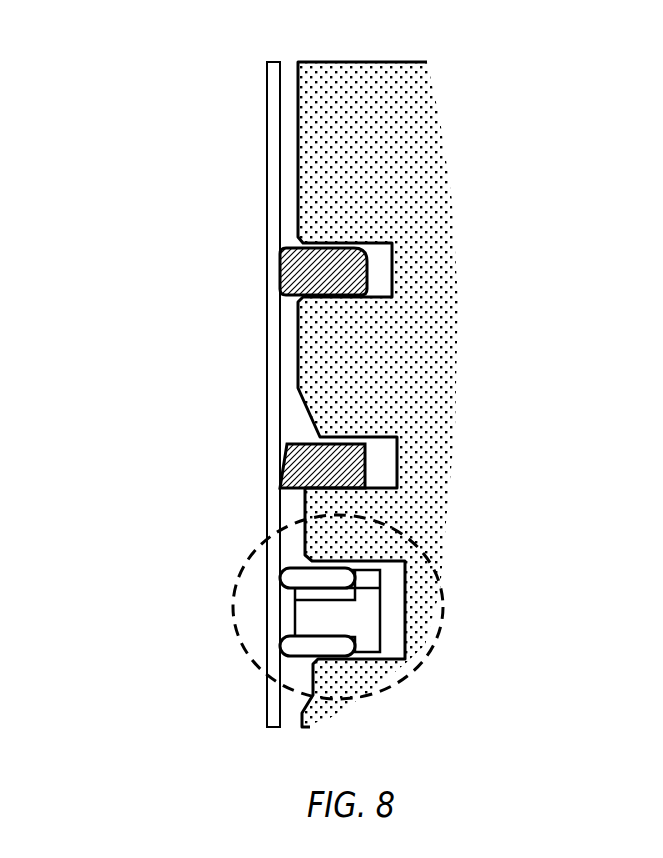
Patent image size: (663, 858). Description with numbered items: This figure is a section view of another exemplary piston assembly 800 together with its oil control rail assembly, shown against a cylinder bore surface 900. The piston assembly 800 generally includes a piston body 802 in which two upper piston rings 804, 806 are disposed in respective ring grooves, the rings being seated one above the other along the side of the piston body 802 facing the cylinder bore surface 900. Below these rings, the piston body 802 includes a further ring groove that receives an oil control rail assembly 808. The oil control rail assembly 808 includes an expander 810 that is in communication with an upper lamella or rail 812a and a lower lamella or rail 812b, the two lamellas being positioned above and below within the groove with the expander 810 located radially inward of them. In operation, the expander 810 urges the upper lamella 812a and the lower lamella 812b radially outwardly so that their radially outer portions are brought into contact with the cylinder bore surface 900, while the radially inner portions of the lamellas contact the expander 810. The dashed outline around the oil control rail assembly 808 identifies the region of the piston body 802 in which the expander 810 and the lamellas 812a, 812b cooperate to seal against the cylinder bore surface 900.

The piston assembly 800 is at (140, 98).
The piston body 802 is at (417, 155).
The upper piston ring 804 is at (350, 276).
The upper piston ring 806 is at (347, 468).
The oil control rail assembly 808 is at (423, 660).
The expander 810 is at (367, 580).
The upper lamella 812a is at (300, 578).
The lower lamella 812b is at (292, 646).
The cylinder bore surface 900 is at (277, 100).